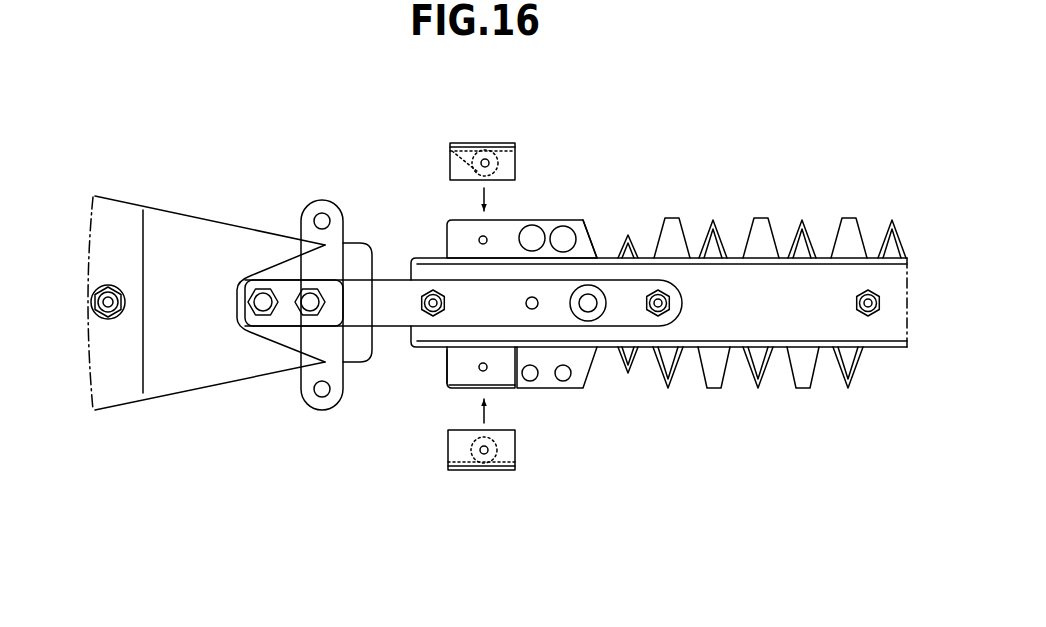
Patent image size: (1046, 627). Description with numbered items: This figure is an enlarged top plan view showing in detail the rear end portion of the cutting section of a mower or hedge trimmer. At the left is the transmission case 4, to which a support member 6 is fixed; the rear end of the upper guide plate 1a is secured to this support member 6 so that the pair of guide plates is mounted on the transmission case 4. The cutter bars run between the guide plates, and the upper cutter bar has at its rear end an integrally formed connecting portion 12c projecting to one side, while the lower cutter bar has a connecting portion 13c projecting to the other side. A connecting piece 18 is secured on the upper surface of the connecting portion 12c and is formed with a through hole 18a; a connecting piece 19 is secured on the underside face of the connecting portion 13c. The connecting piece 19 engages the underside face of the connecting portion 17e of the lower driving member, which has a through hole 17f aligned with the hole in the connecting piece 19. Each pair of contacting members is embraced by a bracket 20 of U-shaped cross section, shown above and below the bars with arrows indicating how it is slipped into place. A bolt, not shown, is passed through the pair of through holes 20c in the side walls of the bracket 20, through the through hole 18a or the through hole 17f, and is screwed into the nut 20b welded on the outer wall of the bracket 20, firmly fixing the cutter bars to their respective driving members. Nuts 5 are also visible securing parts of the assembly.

The transmission case 4 is at (221, 213).
The support member 6 is at (393, 293).
The bolt nut 5 is at (655, 288).
The connecting portion 12c is at (591, 235).
The connecting portion 13c is at (597, 366).
The upper guide plate 1a is at (862, 326).
The connecting piece 18 is at (508, 221).
The through hole 18a is at (482, 236).
The connecting piece 19 is at (467, 389).
The connecting portion 17e is at (447, 366).
The through hole 17f is at (480, 369).
The bracket 20 is at (501, 130).
The nut 20b is at (451, 146).
The through holes 20c is at (489, 160).